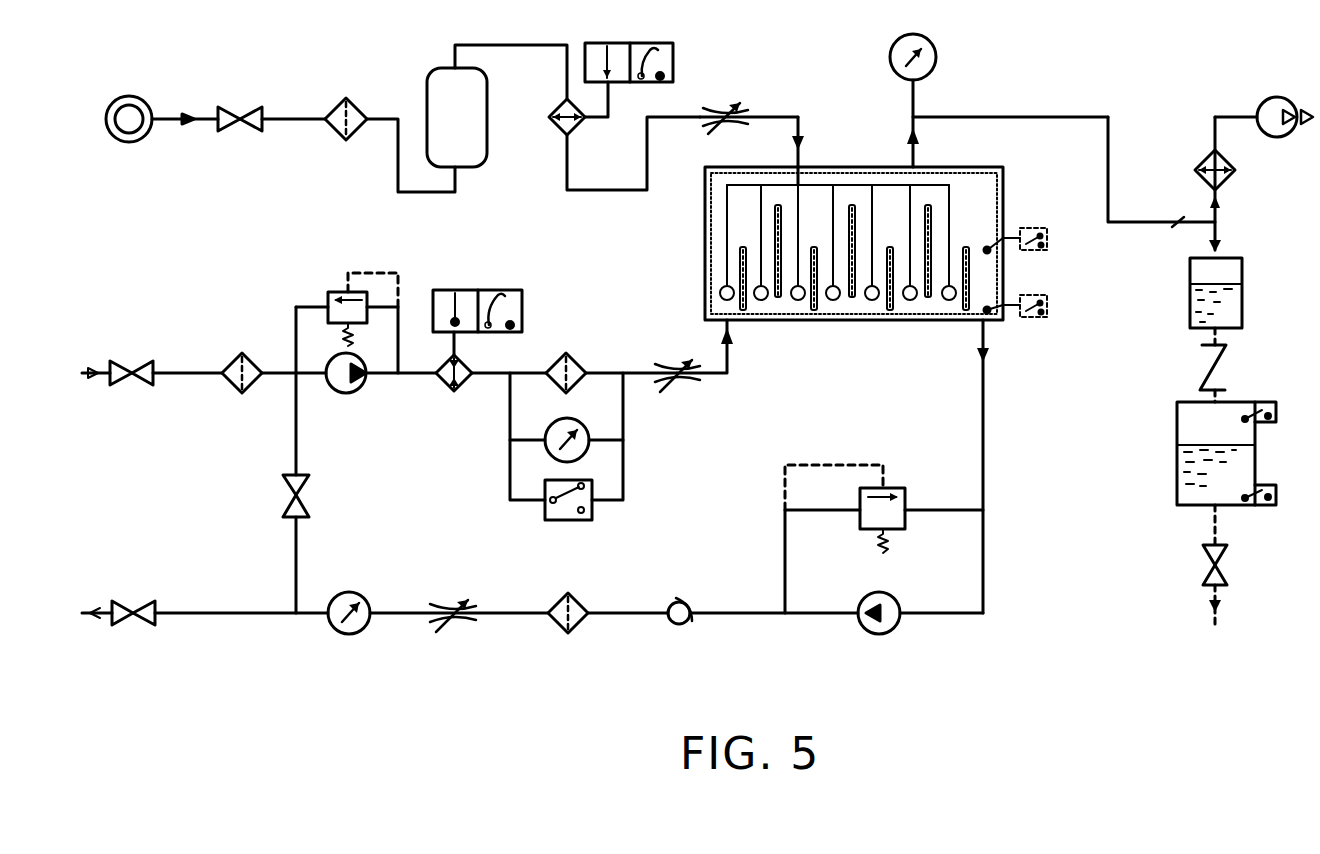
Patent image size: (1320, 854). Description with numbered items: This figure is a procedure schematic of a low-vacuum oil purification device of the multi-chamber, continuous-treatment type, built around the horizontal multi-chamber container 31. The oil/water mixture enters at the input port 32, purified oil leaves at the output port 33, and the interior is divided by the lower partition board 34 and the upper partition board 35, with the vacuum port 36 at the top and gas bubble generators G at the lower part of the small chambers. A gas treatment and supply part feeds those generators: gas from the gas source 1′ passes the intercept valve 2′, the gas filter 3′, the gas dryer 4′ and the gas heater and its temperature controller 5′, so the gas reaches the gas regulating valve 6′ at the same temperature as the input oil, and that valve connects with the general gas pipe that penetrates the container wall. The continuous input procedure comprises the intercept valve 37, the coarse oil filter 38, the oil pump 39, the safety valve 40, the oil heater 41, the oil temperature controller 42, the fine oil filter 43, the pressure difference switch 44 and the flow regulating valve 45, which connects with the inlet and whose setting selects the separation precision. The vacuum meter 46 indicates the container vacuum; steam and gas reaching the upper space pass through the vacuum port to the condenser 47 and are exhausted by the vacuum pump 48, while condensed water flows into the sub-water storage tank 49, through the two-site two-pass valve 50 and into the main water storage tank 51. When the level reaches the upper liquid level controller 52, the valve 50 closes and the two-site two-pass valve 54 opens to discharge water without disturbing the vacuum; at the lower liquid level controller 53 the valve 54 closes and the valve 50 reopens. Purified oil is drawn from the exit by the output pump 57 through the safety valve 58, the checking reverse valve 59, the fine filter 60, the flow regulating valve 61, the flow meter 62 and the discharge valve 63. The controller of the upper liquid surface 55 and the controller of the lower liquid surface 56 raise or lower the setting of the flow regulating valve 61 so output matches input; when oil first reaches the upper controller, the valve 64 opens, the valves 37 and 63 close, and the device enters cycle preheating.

The gas source 1′ is at (162, 111).
The intercept valve 2′ is at (271, 108).
The gas filter 3′ is at (390, 139).
The gas dryer 4′ is at (497, 106).
The gas heater and its temperature controller 5′ is at (613, 136).
The gas regulating valve 6′ is at (694, 114).
The multi-chamber container 31 is at (958, 168).
The input port of the oil/water mixture liquid 32 is at (717, 346).
The output port of the purified oil 33 is at (997, 466).
The lower partition board 34 is at (826, 322).
The upper partition board 35 is at (772, 322).
The vacuum port 36 is at (896, 142).
The gas bubble generators G is at (898, 322).
The intercept valve 37 is at (152, 362).
The coarse oil filter 38 is at (274, 366).
The oil pump 39 is at (381, 366).
The safety valve 40 is at (347, 372).
The oil heater 41 is at (491, 361).
The oil temperature controller 42 is at (477, 299).
The fine oil filter 43 is at (611, 368).
The pressure difference switch 44 is at (566, 446).
The flow regulating valve 45 is at (683, 385).
The vacuum meter 46 is at (999, 100).
The condenser 47 is at (1230, 184).
The vacuum pump 48 is at (1213, 148).
The sub-water storage tank 49 is at (1235, 293).
The two-site two-pass valve 50 is at (1204, 365).
The main water storage tank 51 is at (1205, 453).
The upper liquid level controller 52 is at (1276, 411).
The lower liquid level controller 53 is at (1276, 493).
The two-site two-pass valve 54 is at (1229, 565).
The controller of the upper liquid surface 55 is at (1033, 240).
The controller of the lower liquid surface 56 is at (1033, 307).
The output pump 57 is at (920, 609).
The safety valve 58 is at (884, 539).
The checking reverse valve 59 is at (763, 605).
The fine filter 60 is at (608, 607).
The flow regulating valve 61 is at (461, 605).
The flow meter 62 is at (438, 607).
The discharge valve 63 is at (205, 602).
The valve 64 is at (311, 544).